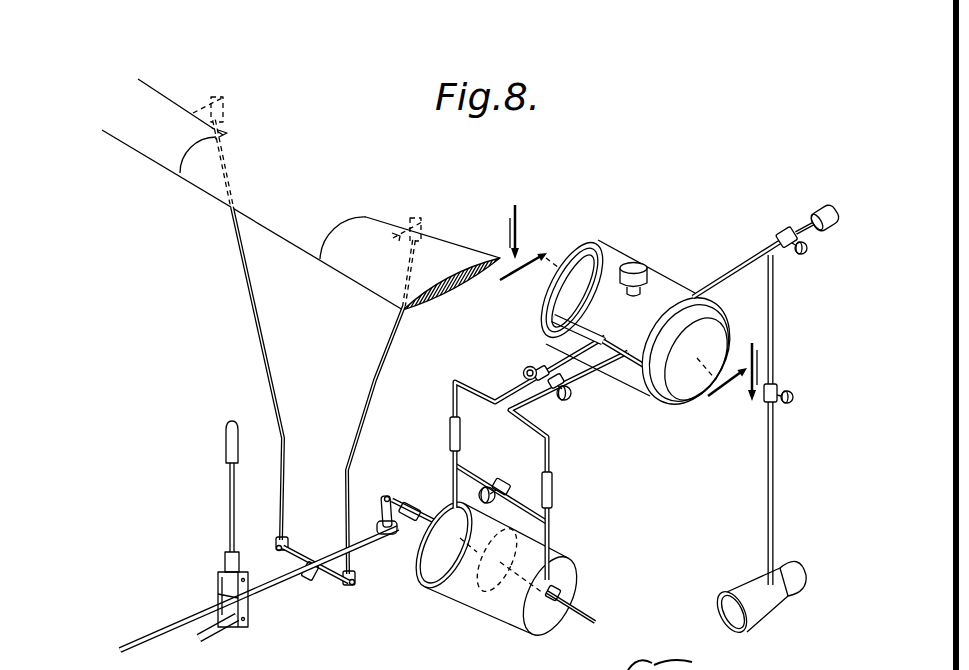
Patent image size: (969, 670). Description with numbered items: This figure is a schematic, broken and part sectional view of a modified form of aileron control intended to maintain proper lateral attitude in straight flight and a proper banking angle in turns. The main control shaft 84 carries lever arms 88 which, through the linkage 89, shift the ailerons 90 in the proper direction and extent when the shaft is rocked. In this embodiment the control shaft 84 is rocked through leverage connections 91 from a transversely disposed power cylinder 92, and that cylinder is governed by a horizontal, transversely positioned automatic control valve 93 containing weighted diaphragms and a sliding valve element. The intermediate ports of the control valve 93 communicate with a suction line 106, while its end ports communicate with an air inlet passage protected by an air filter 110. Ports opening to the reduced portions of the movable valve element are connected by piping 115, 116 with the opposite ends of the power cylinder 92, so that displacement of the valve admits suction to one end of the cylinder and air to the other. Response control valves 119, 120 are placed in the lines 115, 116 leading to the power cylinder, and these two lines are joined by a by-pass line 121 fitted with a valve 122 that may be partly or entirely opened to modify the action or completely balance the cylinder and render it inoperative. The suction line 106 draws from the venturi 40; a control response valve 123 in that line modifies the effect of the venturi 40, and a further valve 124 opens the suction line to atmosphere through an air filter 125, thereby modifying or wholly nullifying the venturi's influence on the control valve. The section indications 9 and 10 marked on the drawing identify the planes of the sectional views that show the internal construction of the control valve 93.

The venturi 40 is at (752, 588).
The main control shaft 84 is at (262, 601).
The lever arms 88 is at (339, 584).
The linkage 89 is at (343, 491).
The ailerons 90 is at (151, 152).
The leverage connections 91 is at (392, 497).
The power cylinder 92 is at (458, 565).
The automatic control valve 93 is at (653, 297).
The suction line 106 is at (731, 270).
The air filter 110 is at (638, 264).
The piping 115 is at (517, 391).
The piping 116 is at (530, 407).
The response control valve 119 is at (537, 363).
The response control valve 120 is at (571, 391).
The by-pass line 121 is at (470, 467).
The valve 122 is at (503, 486).
The control response valve 123 is at (767, 398).
The valve 124 is at (786, 232).
The air filter 125 is at (825, 207).
The section line 9- 9 is at (632, 303).
The section line 10- 10 is at (623, 326).